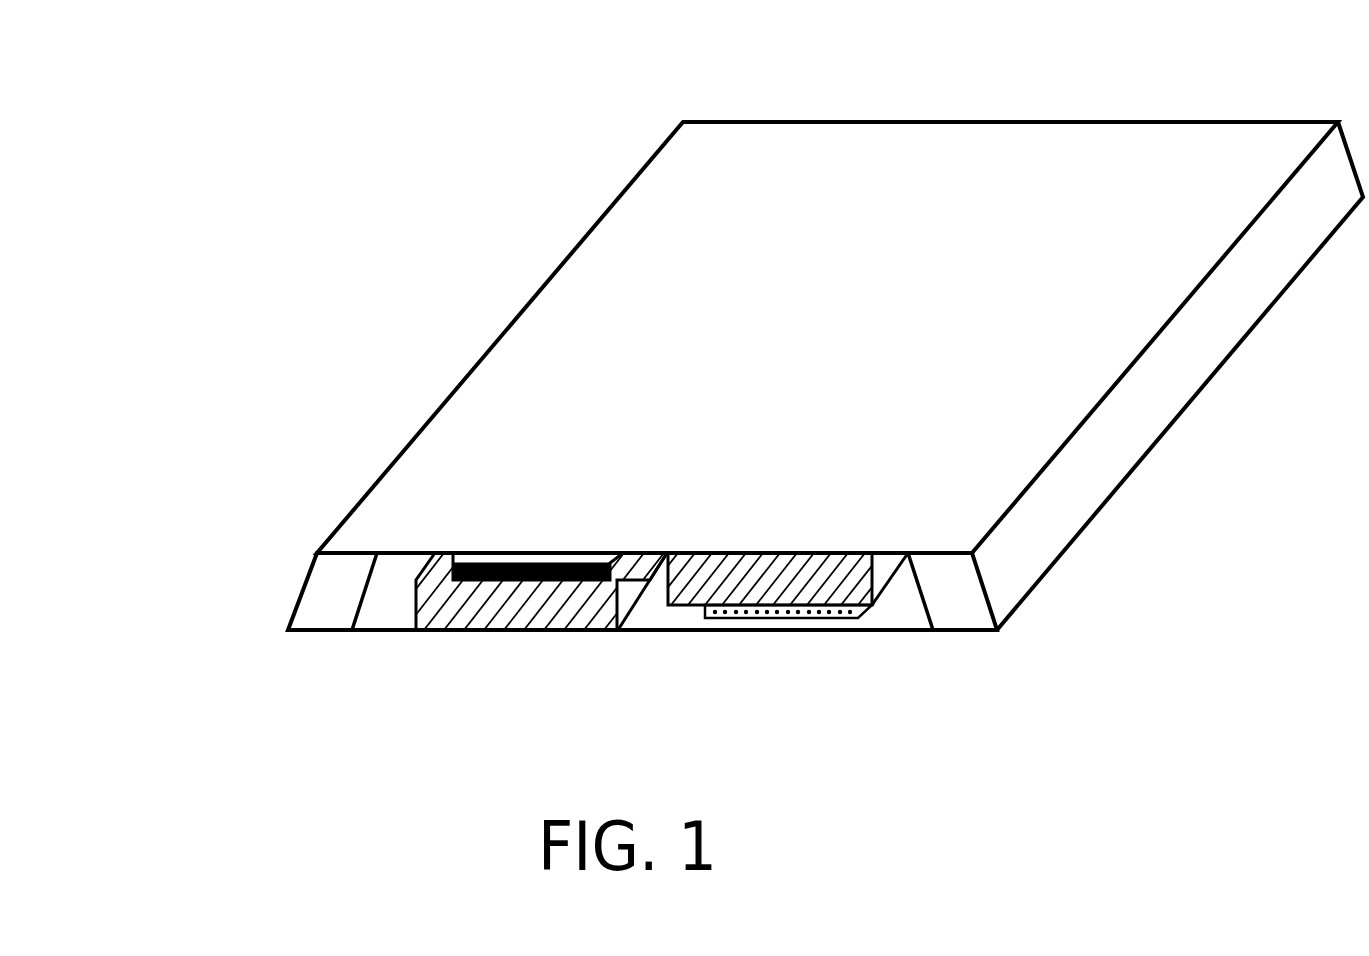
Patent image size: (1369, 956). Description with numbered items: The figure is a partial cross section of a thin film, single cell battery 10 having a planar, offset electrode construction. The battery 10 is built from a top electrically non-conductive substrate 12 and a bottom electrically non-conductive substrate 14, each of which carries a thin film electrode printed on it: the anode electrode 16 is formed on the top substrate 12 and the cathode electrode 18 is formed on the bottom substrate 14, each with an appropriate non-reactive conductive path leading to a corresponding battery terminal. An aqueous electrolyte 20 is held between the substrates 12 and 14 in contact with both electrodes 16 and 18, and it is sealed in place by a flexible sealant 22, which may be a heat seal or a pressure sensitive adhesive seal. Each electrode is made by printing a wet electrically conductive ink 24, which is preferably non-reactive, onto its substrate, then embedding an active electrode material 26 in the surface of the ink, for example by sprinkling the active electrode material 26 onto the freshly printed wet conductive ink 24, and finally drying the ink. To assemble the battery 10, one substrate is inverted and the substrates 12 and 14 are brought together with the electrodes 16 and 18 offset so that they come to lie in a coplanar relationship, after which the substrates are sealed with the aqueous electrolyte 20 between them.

The thin film single cell battery 10 is at (392, 215).
The top electrically non-conductive substrate 12 is at (480, 427).
The bottom electrically non-conductive substrate 14 is at (382, 633).
The anode electrode 16 is at (883, 553).
The cathode electrode 18 is at (453, 648).
The aqueous electrolyte 20 is at (897, 615).
The flexible sealant 22 is at (957, 632).
The electrically conductive ink 24 is at (560, 612).
The active electrode material 26 is at (618, 578).